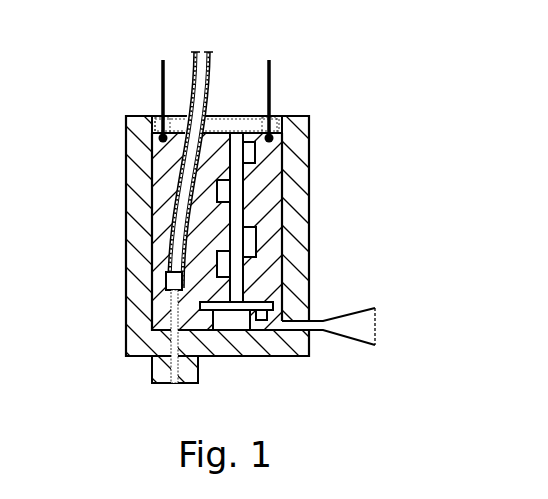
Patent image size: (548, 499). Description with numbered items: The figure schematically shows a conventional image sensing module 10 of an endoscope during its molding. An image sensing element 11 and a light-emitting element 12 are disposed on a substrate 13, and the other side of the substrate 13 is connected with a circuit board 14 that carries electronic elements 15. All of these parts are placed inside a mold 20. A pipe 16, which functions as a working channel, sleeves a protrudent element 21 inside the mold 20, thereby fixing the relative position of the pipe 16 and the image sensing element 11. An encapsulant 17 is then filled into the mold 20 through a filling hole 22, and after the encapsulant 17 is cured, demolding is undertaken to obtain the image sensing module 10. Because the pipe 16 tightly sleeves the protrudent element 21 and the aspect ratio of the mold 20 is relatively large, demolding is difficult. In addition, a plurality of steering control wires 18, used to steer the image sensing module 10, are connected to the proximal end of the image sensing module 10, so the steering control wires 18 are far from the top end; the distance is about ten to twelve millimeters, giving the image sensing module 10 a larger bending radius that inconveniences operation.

The image sensing module 10 is at (139, 84).
The image sensing element 11 is at (237, 325).
The light-emitting element 12 is at (268, 315).
The substrate 13 is at (273, 291).
The circuit board 14 is at (252, 194).
The electronic elements 15 is at (310, 156).
The pipe 16 is at (212, 78).
The encapsulant 17 is at (165, 185).
The steering control wires 18 is at (272, 90).
The mold 20 is at (138, 250).
The protrudent element 21 is at (153, 376).
The filling hole 22 is at (372, 325).